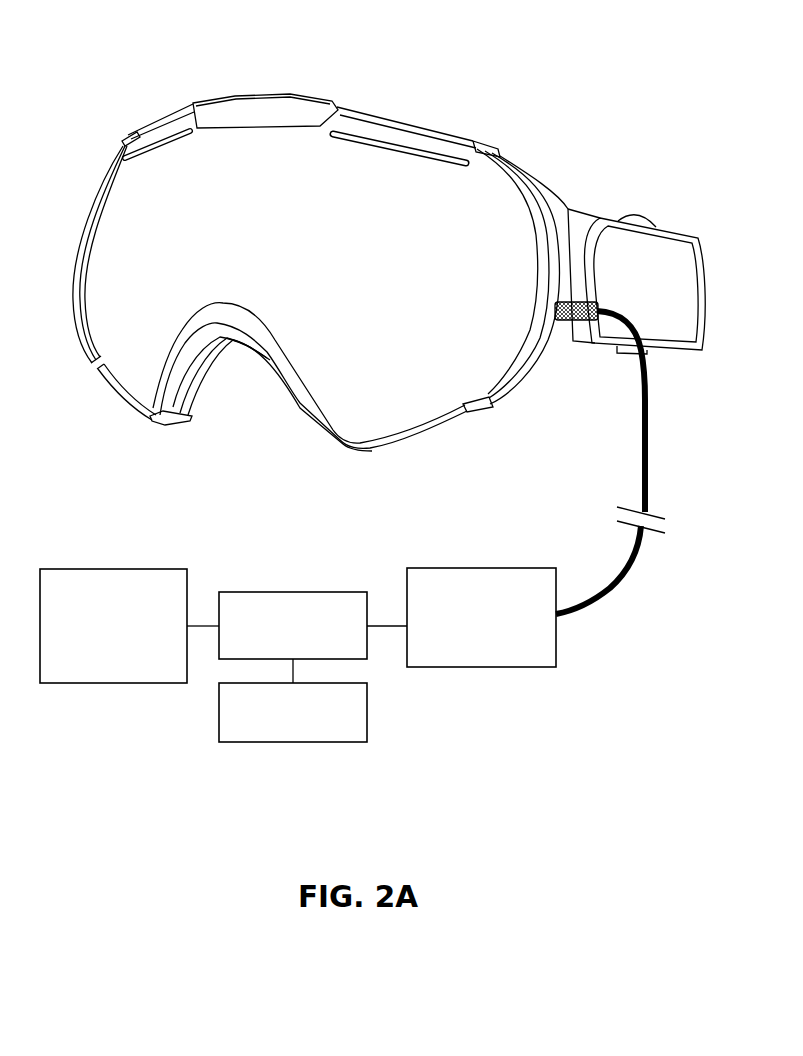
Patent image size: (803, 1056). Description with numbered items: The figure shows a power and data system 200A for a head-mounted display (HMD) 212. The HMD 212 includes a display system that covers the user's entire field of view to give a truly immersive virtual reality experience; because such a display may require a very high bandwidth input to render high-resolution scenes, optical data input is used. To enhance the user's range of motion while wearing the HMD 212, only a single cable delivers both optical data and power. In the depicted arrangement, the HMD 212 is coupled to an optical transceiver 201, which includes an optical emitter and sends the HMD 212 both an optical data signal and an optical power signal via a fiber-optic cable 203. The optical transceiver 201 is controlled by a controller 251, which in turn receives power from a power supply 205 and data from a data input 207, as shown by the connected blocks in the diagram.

The power and data system 200A is at (362, 21).
The head-mounted display (HMD) 212 is at (142, 101).
The fiber-optic cable 203 is at (600, 600).
The data input 207 is at (100, 648).
The controller 251 is at (280, 648).
The power supply 205 is at (280, 733).
The optical transceiver 201 is at (468, 650).